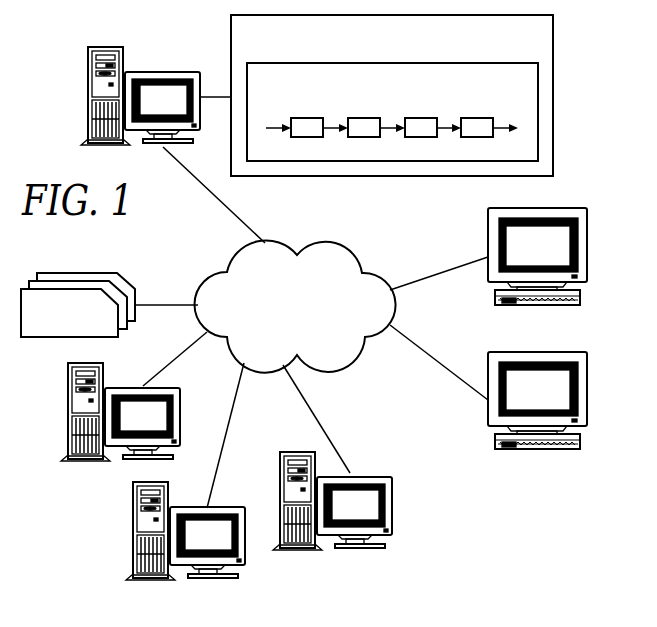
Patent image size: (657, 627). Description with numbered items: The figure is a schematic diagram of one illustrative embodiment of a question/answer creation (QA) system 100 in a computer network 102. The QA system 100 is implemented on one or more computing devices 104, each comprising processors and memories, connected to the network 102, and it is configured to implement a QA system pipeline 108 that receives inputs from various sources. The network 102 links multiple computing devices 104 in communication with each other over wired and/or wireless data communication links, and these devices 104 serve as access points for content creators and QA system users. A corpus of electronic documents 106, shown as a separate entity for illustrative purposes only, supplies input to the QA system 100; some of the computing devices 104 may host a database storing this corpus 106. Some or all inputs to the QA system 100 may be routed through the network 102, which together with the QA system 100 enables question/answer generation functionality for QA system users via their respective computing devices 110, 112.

The question/answer creation (QA) system 100 is at (231, 37).
The computer network 102 is at (330, 241).
The computing devices 104 is at (88, 71).
The corpus of electronic documents 106 is at (62, 272).
The QA system pipeline 108 is at (288, 62).
The QA system user computing device 110 is at (587, 231).
The QA system user computing device 112 is at (587, 375).